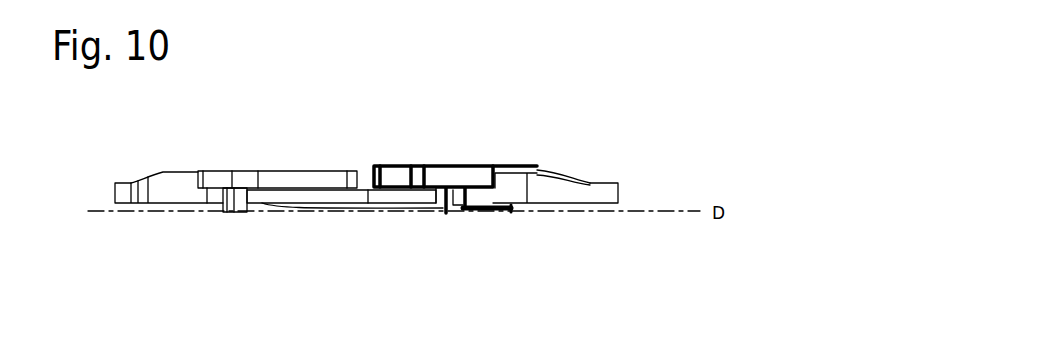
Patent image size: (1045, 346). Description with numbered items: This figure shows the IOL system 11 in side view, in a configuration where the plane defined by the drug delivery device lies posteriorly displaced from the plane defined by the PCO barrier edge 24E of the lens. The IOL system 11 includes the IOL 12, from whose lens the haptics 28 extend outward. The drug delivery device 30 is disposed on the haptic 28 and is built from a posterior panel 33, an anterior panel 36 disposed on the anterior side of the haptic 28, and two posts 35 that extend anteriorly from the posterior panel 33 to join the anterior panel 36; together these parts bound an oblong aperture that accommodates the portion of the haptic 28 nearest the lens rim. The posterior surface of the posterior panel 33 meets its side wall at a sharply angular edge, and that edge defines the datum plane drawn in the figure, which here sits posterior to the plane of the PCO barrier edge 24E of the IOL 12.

The IOL system 11 is at (256, 152).
The IOL 12 is at (347, 223).
The PCO barrier edge 24E is at (318, 212).
The haptic 28 is at (620, 199).
The drug delivery device 30 is at (439, 151).
The posterior panel 33 is at (493, 210).
The posts 35 is at (447, 213).
The anterior panel 36 is at (483, 167).